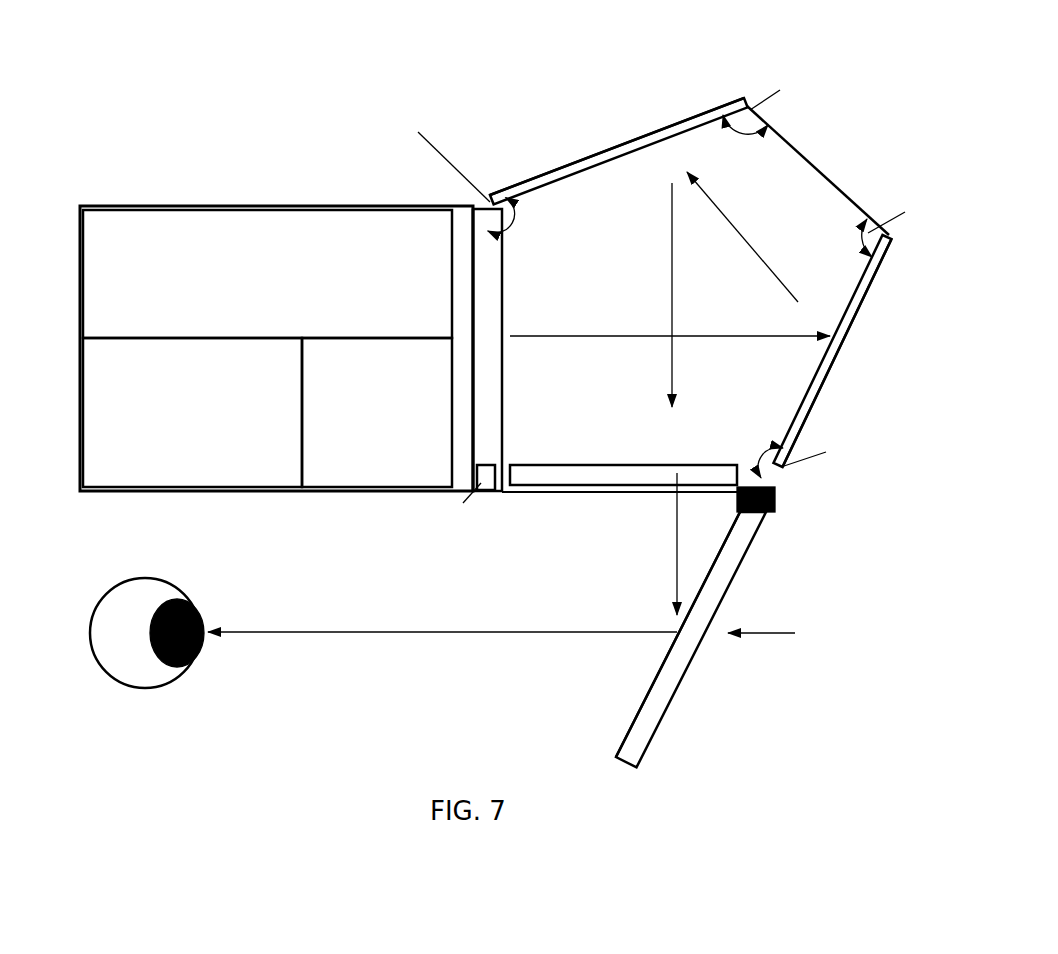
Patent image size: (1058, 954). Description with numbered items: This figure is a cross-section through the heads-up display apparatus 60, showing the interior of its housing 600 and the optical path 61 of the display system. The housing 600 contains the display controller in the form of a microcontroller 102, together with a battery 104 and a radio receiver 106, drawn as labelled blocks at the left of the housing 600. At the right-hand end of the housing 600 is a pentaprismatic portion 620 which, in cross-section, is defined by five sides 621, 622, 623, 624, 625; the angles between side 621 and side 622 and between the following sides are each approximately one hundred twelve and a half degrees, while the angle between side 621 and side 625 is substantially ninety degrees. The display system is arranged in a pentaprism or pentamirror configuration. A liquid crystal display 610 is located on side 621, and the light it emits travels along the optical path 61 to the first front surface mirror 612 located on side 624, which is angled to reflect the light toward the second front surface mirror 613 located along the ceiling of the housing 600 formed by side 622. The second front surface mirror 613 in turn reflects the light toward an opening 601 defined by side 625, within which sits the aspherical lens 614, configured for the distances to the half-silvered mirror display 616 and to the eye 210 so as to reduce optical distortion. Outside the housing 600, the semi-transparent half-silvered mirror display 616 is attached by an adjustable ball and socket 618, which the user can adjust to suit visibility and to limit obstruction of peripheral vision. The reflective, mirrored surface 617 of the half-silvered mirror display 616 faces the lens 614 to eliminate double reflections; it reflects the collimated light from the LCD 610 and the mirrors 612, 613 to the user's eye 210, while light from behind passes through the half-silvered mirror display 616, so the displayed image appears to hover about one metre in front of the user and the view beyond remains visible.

The heads-up display apparatus 60 is at (218, 125).
The housing 600 is at (357, 207).
The battery 104 is at (267, 274).
The microcontroller 102 is at (192, 412).
The radio receiver 106 is at (377, 412).
The liquid crystal display (LCD) 610 is at (483, 252).
The side 621 is at (473, 447).
The second front surface mirror 613 is at (640, 142).
The side 622 is at (573, 165).
The pentaprismatic portion 620 is at (795, 128).
The side 623 is at (805, 150).
The first front surface mirror 612 is at (842, 338).
The side 624 is at (815, 403).
The ball and socket 618 is at (775, 494).
The half-silvered mirror display 616 is at (732, 577).
The reflective, mirrored surface 617 is at (637, 703).
The aspherical lens 614 is at (641, 481).
The side 625 is at (651, 492).
The opening 601 is at (545, 500).
The optical path 61 is at (632, 333).
The eye 210 is at (140, 668).